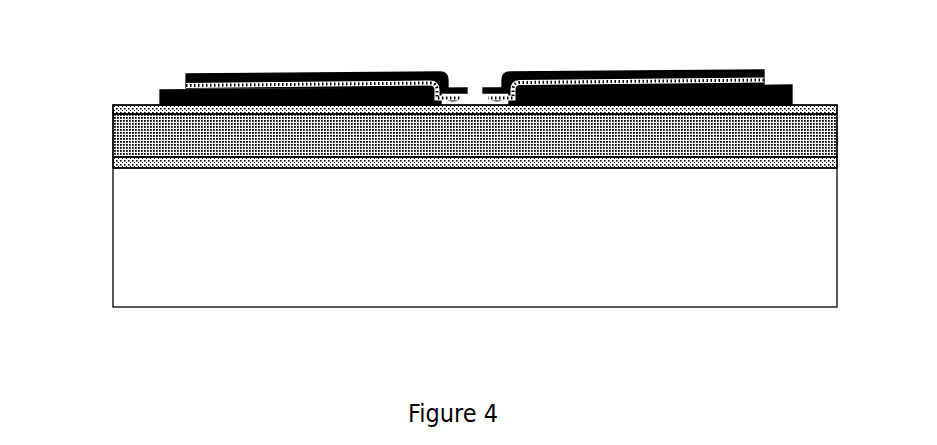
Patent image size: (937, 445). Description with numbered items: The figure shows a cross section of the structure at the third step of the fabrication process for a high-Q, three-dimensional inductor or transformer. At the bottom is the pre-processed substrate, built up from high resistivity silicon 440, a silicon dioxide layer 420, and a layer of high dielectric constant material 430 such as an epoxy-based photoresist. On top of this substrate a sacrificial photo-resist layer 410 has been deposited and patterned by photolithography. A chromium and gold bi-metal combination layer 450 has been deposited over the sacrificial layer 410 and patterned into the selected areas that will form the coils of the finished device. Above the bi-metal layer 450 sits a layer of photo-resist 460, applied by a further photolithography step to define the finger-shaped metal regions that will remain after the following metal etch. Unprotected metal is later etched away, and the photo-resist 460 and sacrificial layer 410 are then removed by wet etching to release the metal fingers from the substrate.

The sacrificial layer 410 is at (786, 83).
The silicon dioxide layer 420 is at (108, 110).
The high dielectric constant material layer 430 is at (843, 140).
The high resistivity silicon substrate 440 is at (108, 266).
The bi-metal combination layer 450 is at (185, 84).
The photo-resist layer 460 is at (762, 66).